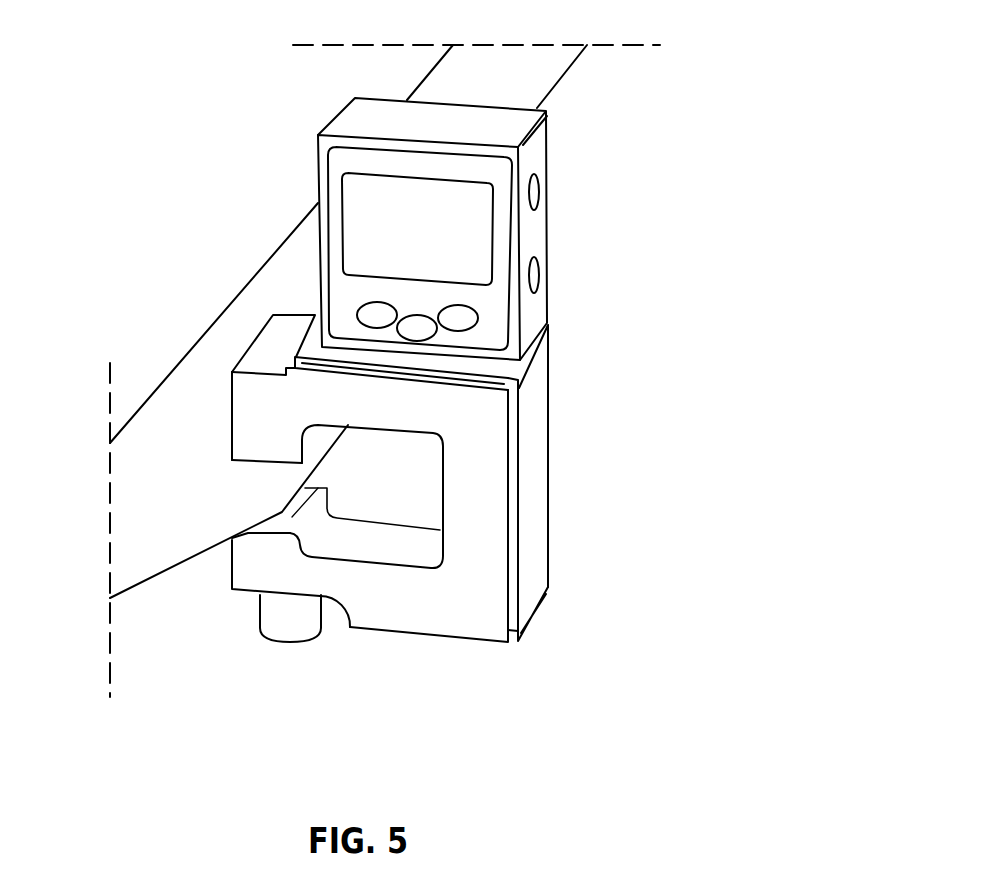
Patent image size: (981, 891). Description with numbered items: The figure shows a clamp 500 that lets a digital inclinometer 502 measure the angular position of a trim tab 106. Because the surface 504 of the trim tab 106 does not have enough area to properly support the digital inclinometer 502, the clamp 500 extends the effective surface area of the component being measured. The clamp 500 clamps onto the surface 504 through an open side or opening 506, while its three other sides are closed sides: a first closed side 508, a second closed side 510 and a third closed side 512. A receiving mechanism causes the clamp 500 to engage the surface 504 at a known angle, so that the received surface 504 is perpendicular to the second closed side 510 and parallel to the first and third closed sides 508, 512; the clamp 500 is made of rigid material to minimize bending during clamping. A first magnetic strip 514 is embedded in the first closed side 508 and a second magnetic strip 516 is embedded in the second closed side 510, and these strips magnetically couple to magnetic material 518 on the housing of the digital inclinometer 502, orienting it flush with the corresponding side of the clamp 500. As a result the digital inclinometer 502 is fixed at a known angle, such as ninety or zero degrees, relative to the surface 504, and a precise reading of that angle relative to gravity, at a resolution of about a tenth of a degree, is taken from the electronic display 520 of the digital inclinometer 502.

The trim tab 106 is at (140, 585).
The clamp 500 is at (458, 620).
The digital inclinometer 502 is at (377, 117).
The surface 504 is at (217, 510).
The opening 506 is at (330, 478).
The first closed side 508 is at (258, 352).
The second closed side 510 is at (523, 623).
The third closed side 512 is at (377, 632).
The first magnetic strip 514 is at (532, 505).
The second magnetic strip 516 is at (520, 358).
The magnetic material 518 is at (537, 270).
The electronic display 520 is at (352, 198).